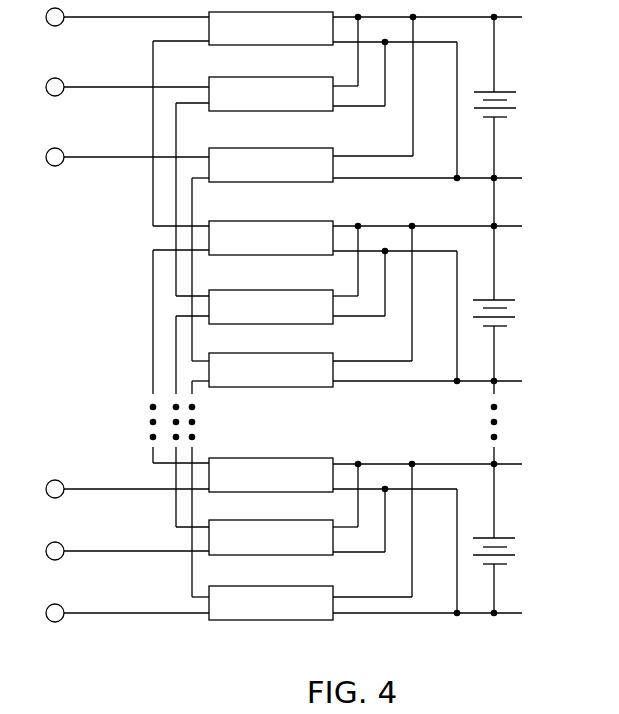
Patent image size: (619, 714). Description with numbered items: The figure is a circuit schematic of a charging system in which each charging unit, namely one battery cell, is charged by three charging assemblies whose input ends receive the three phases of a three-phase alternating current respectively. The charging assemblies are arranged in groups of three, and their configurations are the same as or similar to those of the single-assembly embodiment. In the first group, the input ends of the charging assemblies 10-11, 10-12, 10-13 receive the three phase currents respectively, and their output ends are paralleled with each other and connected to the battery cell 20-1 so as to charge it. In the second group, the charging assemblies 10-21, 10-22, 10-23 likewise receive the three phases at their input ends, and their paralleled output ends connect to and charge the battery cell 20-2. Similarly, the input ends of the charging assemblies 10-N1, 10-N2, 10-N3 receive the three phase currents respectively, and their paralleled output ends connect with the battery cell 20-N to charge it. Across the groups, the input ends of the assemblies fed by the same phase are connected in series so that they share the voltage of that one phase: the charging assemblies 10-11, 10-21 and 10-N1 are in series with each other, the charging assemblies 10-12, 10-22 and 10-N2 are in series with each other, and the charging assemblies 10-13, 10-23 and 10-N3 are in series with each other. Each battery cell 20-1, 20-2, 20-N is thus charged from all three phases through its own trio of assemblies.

The charging assembly 10-11 is at (271, 28).
The charging assembly 10-12 is at (271, 94).
The charging assembly 10-13 is at (271, 165).
The charging assembly 10-21 is at (271, 238).
The charging assembly 10-22 is at (271, 307).
The charging assembly 10-23 is at (271, 370).
The charging assembly 10-N1 is at (271, 475).
The charging assembly 10-N2 is at (271, 537).
The charging assembly 10-N3 is at (271, 603).
The battery cell 20-1 is at (517, 108).
The battery cell 20-2 is at (513, 317).
The battery cell 20-N is at (513, 555).